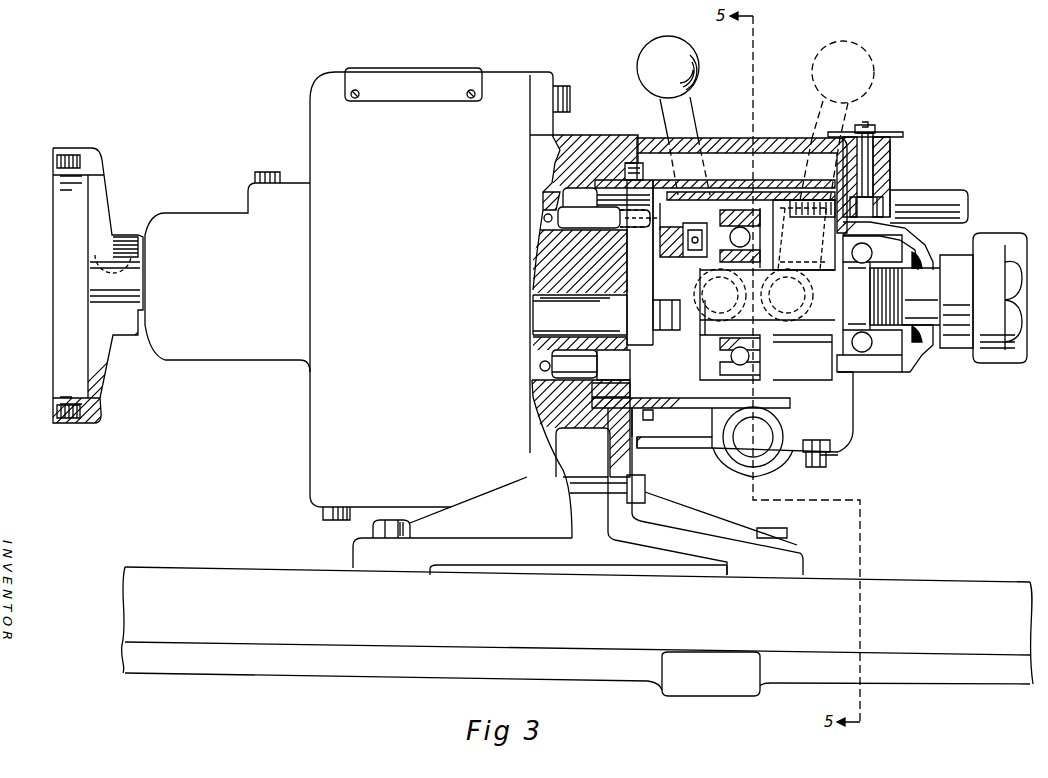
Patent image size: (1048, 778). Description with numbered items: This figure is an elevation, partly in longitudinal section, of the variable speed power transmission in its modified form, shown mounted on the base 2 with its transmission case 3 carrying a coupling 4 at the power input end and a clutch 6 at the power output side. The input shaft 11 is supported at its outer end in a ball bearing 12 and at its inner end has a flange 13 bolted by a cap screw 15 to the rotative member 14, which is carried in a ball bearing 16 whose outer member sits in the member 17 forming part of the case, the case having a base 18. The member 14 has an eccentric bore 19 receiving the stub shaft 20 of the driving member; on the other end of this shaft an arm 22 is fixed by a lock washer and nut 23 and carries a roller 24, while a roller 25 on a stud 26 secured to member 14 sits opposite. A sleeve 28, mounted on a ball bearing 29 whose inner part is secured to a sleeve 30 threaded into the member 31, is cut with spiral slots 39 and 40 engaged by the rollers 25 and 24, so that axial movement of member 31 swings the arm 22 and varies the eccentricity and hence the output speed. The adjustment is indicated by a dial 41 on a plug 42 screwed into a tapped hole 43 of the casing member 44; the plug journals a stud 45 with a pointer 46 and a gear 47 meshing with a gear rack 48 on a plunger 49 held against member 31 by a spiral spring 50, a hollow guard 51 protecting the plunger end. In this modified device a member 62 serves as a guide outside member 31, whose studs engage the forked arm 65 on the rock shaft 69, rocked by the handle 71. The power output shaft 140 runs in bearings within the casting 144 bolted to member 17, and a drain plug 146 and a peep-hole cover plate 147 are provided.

The base 2 is at (893, 590).
The transmission case 3 is at (500, 100).
The coupling 4 is at (1000, 350).
The clutch 6 is at (77, 152).
The shaft 11 is at (905, 296).
The ball bearing 12 is at (862, 352).
The flange 13 is at (727, 294).
The rotative member 14 is at (581, 353).
The cap screw 15 is at (690, 250).
The ball bearing 16 is at (535, 370).
The member 17 is at (594, 160).
The base 18 is at (578, 486).
The bore 19 is at (535, 293).
The stub shaft 20 is at (580, 315).
The arm 22 is at (640, 262).
The lock washer and nut 23 is at (670, 305).
The roller 24 is at (648, 228).
The roller 25 is at (611, 374).
The stud 26 is at (691, 423).
The sleeve 28 is at (552, 203).
The ball bearing 29 is at (811, 233).
The sleeve 30 is at (764, 301).
The member 31 is at (785, 340).
The spiral slot 39 is at (574, 364).
The spiral slot 40 is at (589, 217).
The dial 41 is at (888, 136).
The plug 42 is at (890, 153).
The tapped hole 43 is at (892, 164).
The casing member 44 is at (853, 418).
The stud 45 is at (863, 130).
The pointer 46 is at (875, 126).
The gear 47 is at (880, 205).
The gear rack 48 is at (800, 200).
The plunger 49 is at (804, 235).
The spiral spring 50 is at (912, 229).
The hollow guard 51 is at (958, 203).
The member 62 is at (735, 185).
The arm 65 is at (727, 466).
The rock shaft 69 is at (813, 468).
The handle 71 is at (652, 55).
The power output shaft 140 is at (103, 290).
The casting 144 is at (330, 437).
The drain plug 146 is at (327, 513).
The peep-hole cover plate 147 is at (397, 80).